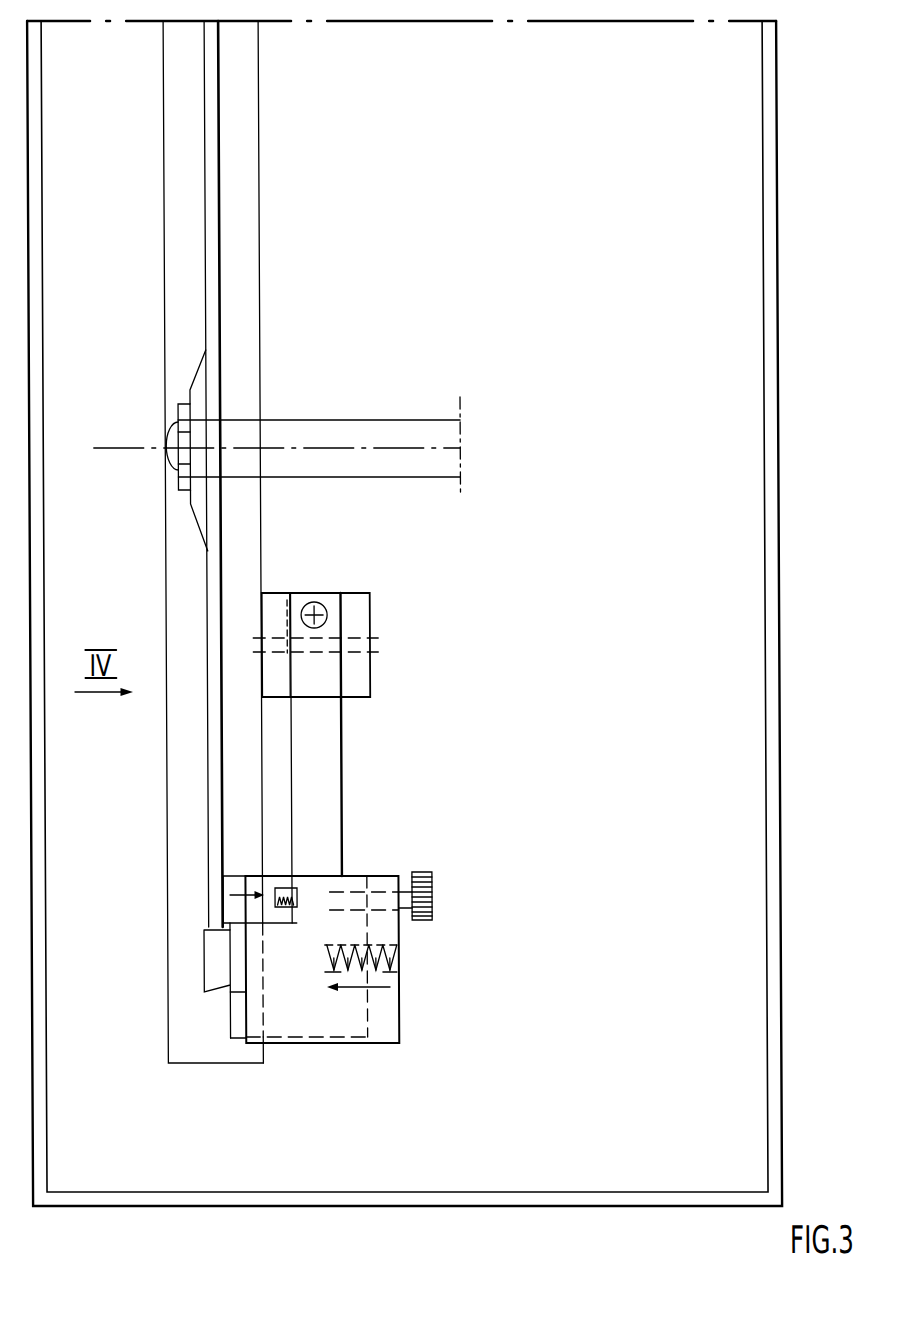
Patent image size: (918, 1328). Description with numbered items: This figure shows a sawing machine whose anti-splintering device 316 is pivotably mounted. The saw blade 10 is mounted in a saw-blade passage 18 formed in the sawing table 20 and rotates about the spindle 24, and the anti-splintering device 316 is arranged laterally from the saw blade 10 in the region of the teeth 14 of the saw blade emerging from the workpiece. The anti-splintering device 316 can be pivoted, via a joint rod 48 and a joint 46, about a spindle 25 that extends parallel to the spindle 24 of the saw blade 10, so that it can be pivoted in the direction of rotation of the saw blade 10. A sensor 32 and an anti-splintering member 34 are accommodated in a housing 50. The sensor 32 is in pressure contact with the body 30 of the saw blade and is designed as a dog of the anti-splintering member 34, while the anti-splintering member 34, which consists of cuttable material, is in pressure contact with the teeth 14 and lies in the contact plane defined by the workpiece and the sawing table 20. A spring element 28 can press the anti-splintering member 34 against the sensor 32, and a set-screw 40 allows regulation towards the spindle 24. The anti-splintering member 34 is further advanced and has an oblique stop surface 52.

The saw blade 10 is at (226, 114).
The teeth 14 is at (203, 953).
The saw-blade passage 18 is at (257, 188).
The sawing table 20 is at (761, 180).
The spindle 24 is at (458, 449).
The spindle 25 is at (375, 643).
The spring element 28 is at (392, 953).
The body 30 is at (212, 60).
The sensor 32 is at (233, 878).
The anti-splintering member 34 is at (295, 1022).
The set-screw 40 is at (428, 885).
The joint 46 is at (379, 577).
The joint rod 48 is at (323, 758).
The housing 50 is at (394, 1023).
The oblique stop surface 52 is at (230, 1018).
The anti-splintering device 316 is at (494, 907).